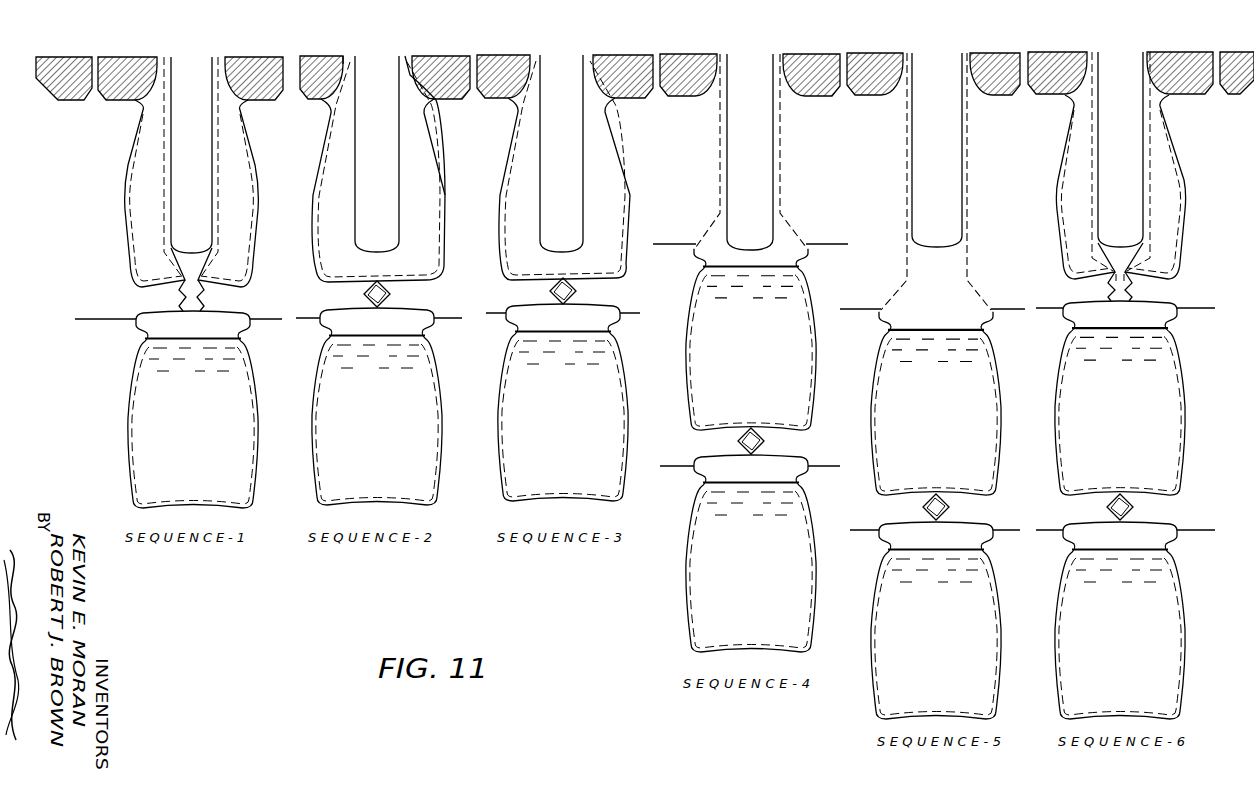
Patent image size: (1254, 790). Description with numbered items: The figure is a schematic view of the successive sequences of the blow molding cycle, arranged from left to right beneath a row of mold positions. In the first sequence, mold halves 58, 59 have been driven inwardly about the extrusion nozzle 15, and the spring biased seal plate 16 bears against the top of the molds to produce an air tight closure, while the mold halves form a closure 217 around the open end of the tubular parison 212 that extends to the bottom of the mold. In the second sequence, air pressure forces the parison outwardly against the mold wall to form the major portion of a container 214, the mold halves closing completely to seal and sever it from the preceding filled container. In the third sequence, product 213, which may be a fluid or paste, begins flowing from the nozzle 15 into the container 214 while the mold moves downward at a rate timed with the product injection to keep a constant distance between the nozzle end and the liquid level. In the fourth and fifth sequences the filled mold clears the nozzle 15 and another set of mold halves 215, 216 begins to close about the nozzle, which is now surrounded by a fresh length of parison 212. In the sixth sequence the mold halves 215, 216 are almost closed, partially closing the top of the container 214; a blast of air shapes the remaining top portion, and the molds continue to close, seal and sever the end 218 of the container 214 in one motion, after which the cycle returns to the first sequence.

The extrusion nozzle 15 is at (400, 180).
The seal plate 16 is at (253, 56).
The mold half 58 is at (105, 172).
The mold half 59 is at (283, 163).
The tubular parison 212 is at (968, 270).
The product 213 is at (168, 403).
The container 214 is at (513, 238).
The mold half 215 is at (1026, 175).
The mold half 216 is at (1232, 181).
The closure 217 is at (181, 287).
The end of the container 218 is at (1134, 285).